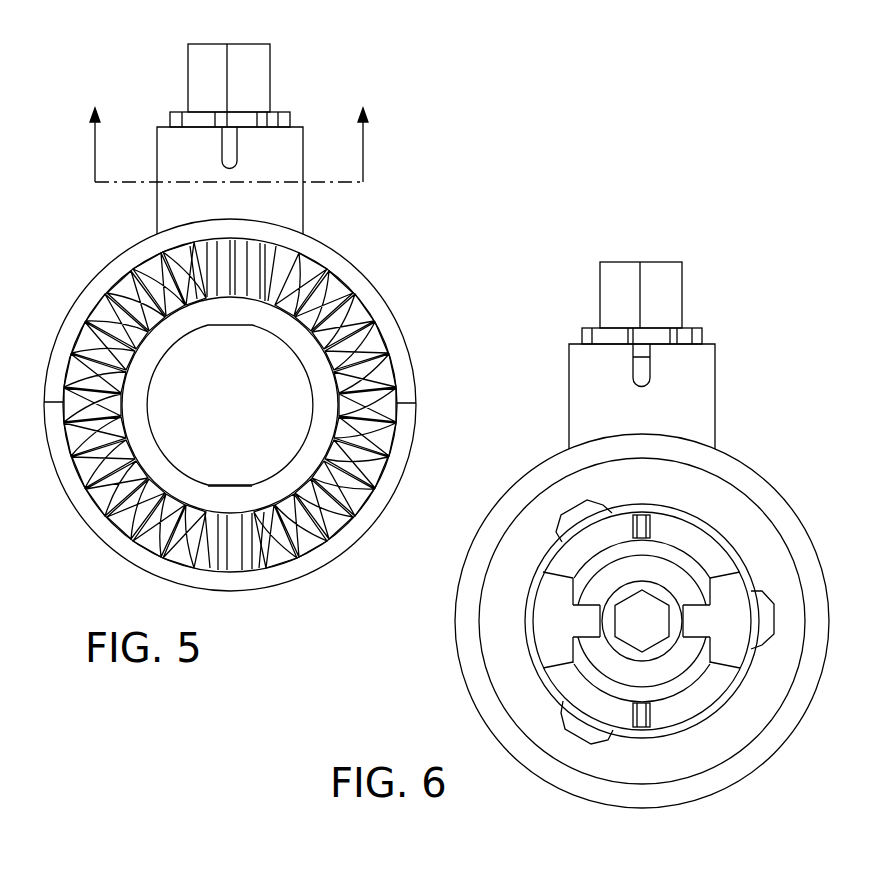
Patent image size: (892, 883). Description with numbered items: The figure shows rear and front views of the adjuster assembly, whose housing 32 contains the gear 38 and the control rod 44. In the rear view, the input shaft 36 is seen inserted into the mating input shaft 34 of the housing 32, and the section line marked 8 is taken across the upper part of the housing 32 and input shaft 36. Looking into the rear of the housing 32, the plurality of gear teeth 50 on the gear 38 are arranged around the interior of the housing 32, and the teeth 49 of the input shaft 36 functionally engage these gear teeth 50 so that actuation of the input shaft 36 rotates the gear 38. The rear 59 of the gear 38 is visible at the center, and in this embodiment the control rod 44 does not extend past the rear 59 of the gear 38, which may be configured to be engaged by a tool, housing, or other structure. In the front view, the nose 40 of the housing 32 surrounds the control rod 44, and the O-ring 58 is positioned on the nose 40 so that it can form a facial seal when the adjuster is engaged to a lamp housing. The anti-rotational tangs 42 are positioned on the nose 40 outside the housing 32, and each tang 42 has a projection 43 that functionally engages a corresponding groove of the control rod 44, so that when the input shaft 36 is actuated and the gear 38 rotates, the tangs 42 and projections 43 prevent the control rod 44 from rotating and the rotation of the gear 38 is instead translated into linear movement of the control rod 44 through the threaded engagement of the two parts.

In FIG. 5, the section line 8- 8 is at (228, 130).
In FIG. 5, the housing 32 is at (75, 517).
In FIG. 6, the housing 32 is at (792, 519).
In FIG. 5, the mating input shaft 34 is at (293, 212).
In FIG. 6, the mating input shaft 34 is at (708, 400).
In FIG. 5, the input shaft 36 is at (258, 58).
In FIG. 6, the input shaft 36 is at (682, 280).
In FIG. 5, the gear 38 is at (267, 480).
In FIG. 6, the nose 40 is at (690, 527).
In FIG. 6, the tang 42 is at (757, 635).
In FIG. 6, the projection 43 is at (597, 640).
In FIG. 6, the control rod 44 is at (657, 652).
In FIG. 5, the tooth 49 is at (192, 250).
In FIG. 5, the gear tooth 50 is at (352, 328).
In FIG. 6, the O-ring 58 is at (740, 735).
In FIG. 5, the rear 59 is at (293, 417).